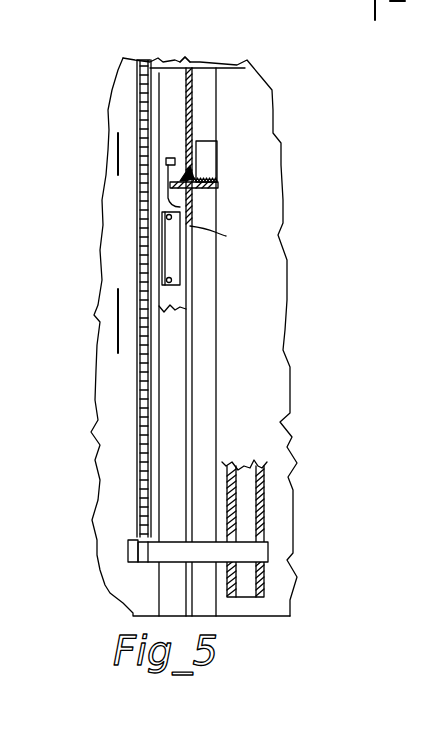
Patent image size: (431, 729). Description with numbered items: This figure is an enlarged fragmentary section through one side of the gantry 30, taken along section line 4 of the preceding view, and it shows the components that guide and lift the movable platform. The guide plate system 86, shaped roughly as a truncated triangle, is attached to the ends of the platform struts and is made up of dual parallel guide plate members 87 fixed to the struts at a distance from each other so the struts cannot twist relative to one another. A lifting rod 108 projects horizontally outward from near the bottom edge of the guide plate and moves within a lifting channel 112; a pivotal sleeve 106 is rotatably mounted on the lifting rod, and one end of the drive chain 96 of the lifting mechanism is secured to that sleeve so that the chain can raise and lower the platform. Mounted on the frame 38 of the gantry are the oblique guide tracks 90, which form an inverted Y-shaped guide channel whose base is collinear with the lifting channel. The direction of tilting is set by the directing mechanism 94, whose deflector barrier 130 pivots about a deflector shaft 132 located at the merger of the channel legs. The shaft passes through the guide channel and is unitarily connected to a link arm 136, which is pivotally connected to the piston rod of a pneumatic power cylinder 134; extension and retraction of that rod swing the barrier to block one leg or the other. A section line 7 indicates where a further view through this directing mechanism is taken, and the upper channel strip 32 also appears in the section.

The section line 4 is at (375, 12).
The section line 7 is at (115, 152).
The gantry 30 is at (188, 58).
The channel strip 32 is at (157, 60).
The frame 38 is at (177, 90).
The guide plate system 86 is at (272, 497).
The guide plate members 87 is at (223, 460).
The guide tracks 90 is at (207, 352).
The directing mechanism 94 is at (218, 152).
The drive chain 96 is at (147, 481).
The pivotal sleeve 106 is at (130, 557).
The lifting rod 108 is at (253, 552).
The lifting channel 112 is at (156, 585).
The deflector barrier 130 is at (219, 180).
The deflector shaft 132 is at (219, 186).
The pneumatic power cylinder 134 is at (180, 255).
The link arm 136 is at (176, 158).